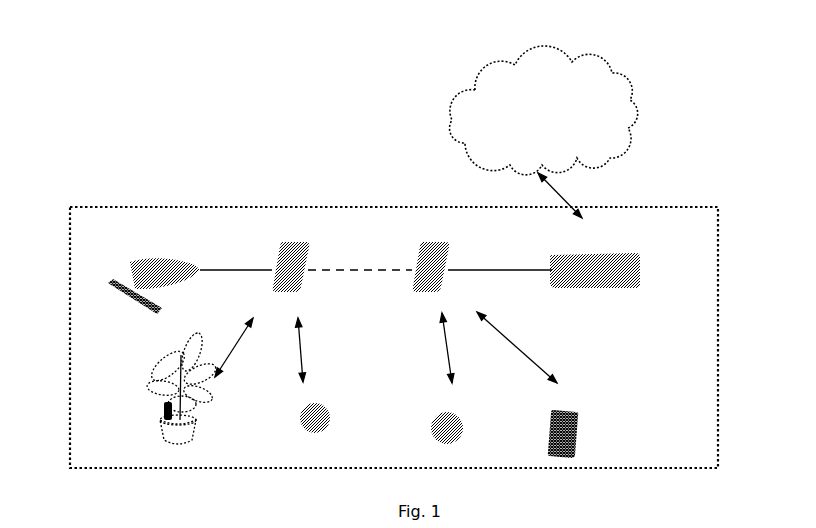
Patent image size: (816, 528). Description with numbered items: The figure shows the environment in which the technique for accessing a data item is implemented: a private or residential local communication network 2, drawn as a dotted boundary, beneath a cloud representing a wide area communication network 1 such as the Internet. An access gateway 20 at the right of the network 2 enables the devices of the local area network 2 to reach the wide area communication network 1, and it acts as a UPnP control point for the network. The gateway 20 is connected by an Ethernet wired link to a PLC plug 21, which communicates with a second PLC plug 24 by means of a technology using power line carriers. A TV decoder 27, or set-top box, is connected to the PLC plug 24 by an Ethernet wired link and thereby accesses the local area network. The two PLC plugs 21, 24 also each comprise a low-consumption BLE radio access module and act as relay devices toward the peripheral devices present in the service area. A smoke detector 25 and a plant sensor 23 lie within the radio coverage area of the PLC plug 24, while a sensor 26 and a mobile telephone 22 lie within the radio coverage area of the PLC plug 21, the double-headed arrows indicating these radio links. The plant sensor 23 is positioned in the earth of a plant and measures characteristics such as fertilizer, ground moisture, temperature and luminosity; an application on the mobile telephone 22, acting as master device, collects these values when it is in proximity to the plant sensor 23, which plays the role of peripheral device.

The wide area communication network 1 is at (453, 140).
The local communication network 2 is at (143, 205).
The access gateway 20 is at (570, 255).
The PLC plug 21 is at (450, 258).
The mobile terminal or telephone 22 is at (575, 425).
The plant sensor 23 is at (163, 405).
The PLC plug 24 is at (310, 255).
The smoke detector 25 is at (327, 410).
The sensor 26 is at (455, 418).
The TV decoder 27 is at (135, 258).